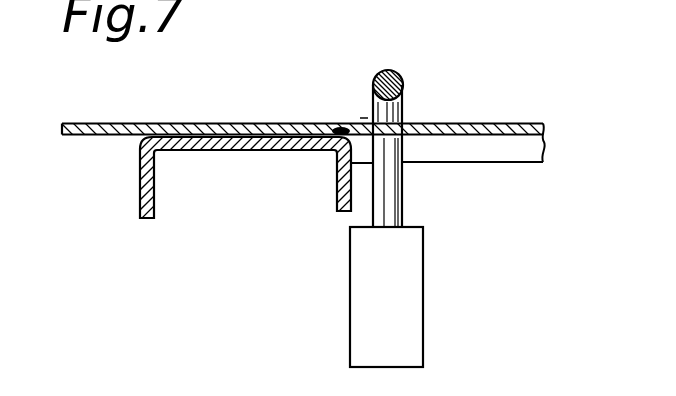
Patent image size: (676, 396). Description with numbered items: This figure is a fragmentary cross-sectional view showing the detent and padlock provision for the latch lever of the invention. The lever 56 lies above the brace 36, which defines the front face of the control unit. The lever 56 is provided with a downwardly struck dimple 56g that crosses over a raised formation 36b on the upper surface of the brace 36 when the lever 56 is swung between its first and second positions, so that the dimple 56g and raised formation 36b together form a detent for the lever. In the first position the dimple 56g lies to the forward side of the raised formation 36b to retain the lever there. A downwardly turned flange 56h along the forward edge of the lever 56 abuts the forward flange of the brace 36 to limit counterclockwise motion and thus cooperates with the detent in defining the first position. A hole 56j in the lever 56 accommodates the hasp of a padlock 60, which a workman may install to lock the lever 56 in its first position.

The brace 36 is at (214, 146).
The raised formation 36b is at (312, 142).
The lever 56 is at (487, 124).
The dimple 56g is at (338, 127).
The downwardly turned flange 56h is at (519, 156).
The hole 56j is at (368, 119).
The padlock 60 is at (396, 204).